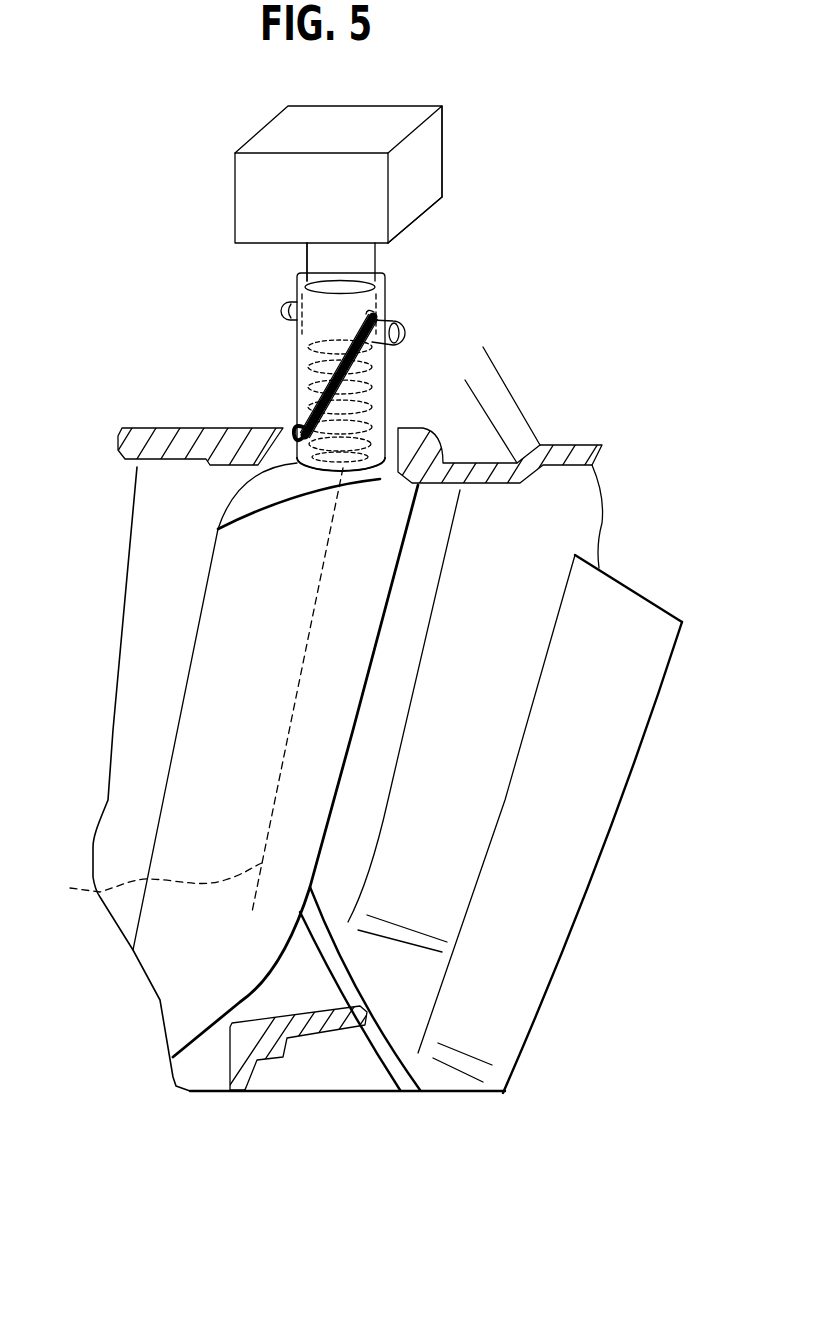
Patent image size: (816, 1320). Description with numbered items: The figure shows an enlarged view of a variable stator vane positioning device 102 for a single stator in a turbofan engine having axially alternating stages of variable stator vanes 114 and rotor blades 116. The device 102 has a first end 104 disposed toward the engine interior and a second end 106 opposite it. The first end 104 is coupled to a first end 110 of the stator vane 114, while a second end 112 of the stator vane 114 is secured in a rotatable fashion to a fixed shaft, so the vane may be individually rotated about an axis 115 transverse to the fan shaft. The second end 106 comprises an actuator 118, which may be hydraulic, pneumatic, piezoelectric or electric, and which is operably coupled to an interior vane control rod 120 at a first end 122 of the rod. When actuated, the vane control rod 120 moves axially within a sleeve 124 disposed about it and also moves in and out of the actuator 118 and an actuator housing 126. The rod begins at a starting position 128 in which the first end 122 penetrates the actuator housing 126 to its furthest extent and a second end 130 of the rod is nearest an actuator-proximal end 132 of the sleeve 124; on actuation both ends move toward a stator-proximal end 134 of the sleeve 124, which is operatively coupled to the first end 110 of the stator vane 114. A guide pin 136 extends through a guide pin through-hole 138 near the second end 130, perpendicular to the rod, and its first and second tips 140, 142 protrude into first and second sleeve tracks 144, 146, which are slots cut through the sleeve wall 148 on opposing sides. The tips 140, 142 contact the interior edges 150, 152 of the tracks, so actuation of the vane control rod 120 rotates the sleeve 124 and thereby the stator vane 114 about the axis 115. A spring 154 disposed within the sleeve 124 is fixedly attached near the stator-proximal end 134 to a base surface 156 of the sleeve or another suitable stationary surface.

The variable stator vane positioning device 102 is at (208, 97).
The first end 104 is at (388, 485).
The second end 106 is at (492, 104).
The first end of stator 110 is at (300, 502).
The second end of stator 112 is at (255, 953).
The variable stator vane 114 is at (197, 633).
The axis of stator vane 115 is at (149, 881).
The rotor blades 116 is at (580, 516).
The actuator 118 is at (349, 138).
The vane control rod 120 is at (365, 258).
The first end of vane control rod 122 is at (286, 254).
The sleeve 124 is at (300, 293).
The actuator housing 126 is at (423, 168).
The starting position 128 is at (487, 183).
The second end of vane control rod 130 is at (293, 337).
The actuator-proximal end of sleeve 132 is at (384, 273).
The stator-proximal end of sleeve 134 is at (337, 455).
The guide pin 136 is at (380, 318).
The guide pin through-hole 138 is at (378, 360).
The first tip of guide pin 140 is at (283, 308).
The second tip of guide pin 142 is at (399, 336).
The first sleeve track 144 is at (298, 373).
The second sleeve track 146 is at (362, 403).
The sleeve wall 148 is at (300, 412).
The interior edge of first sleeve track 150 is at (295, 355).
The interior edge of second sleeve track 152 is at (375, 370).
The spring 154 is at (355, 483).
The base surface 156 is at (347, 473).